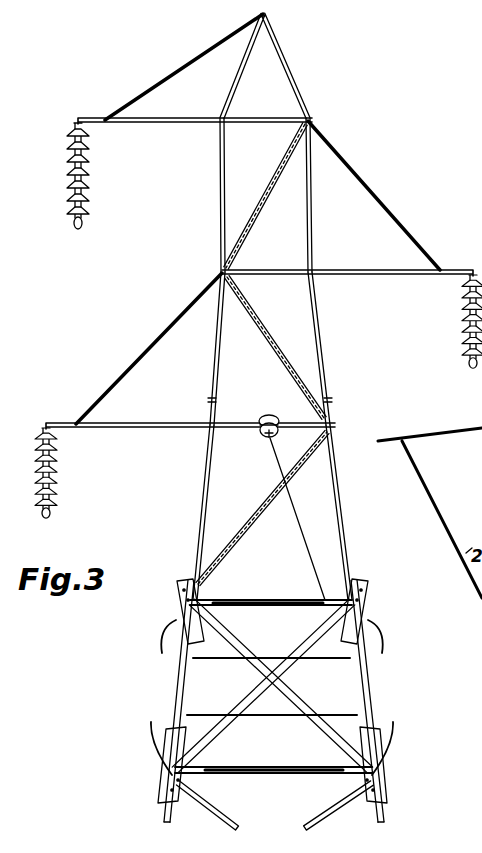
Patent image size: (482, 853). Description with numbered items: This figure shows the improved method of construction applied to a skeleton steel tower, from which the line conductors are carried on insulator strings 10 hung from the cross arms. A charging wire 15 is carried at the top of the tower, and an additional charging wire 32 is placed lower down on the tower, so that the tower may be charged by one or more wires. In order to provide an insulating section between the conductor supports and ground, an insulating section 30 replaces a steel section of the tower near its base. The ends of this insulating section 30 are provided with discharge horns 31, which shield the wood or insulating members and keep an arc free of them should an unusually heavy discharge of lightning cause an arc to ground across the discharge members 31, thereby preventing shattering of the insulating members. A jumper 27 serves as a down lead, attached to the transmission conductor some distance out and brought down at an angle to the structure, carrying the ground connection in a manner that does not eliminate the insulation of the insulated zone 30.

The insulator string 10 is at (84, 227).
The charging wire 15 is at (267, 15).
The jumper 27 is at (293, 505).
The insulating section 30 is at (178, 688).
The discharge horns 31 is at (160, 641).
The additional charging wire 32 is at (266, 268).